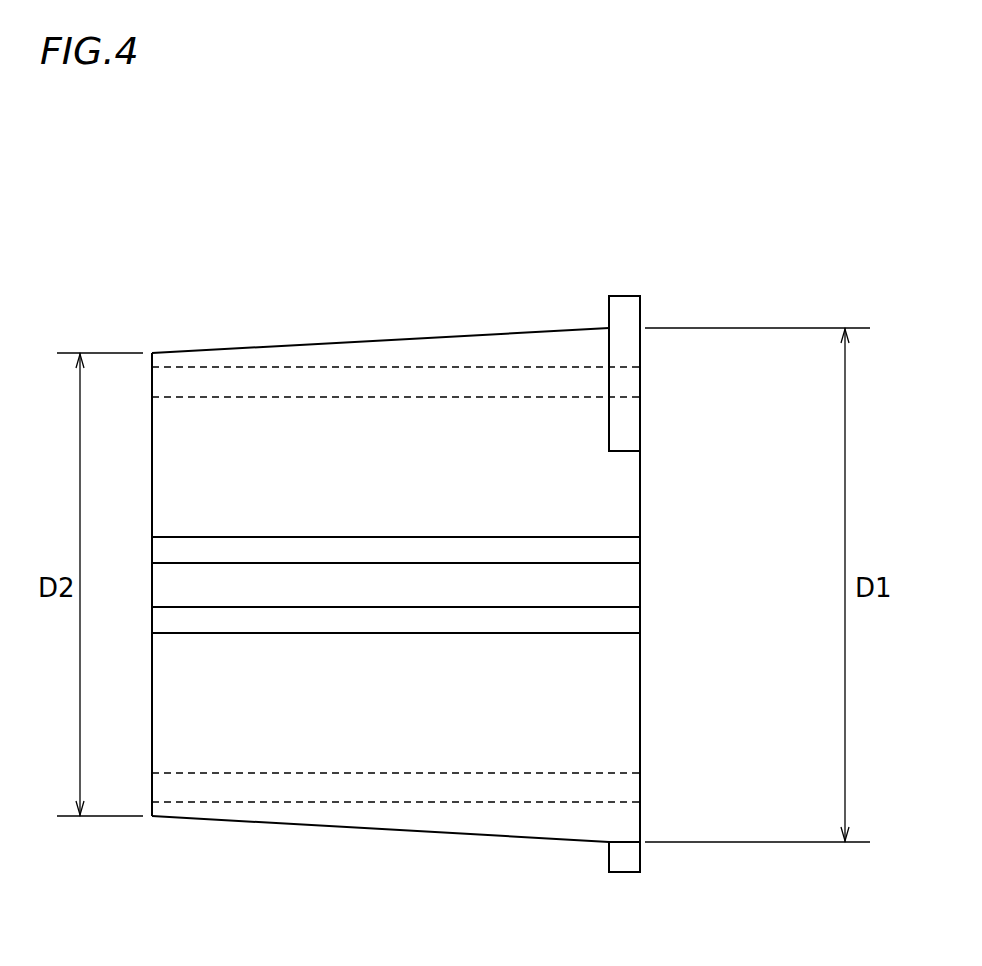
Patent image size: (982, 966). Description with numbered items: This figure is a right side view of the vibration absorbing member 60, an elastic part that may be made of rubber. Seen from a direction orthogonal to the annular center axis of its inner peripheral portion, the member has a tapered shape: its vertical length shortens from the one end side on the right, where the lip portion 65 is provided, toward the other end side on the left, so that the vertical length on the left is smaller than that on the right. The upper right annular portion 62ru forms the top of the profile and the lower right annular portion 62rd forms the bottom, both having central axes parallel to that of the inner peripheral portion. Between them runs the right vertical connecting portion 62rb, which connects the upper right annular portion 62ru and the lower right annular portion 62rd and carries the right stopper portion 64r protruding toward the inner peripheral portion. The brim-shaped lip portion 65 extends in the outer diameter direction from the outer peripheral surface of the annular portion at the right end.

The vibration absorbing member 60 is at (460, 511).
The upper right annular portion 62ru is at (413, 352).
The lower right annular portion 62rd is at (410, 820).
The right vertical connecting portion 62rb is at (552, 473).
The right stopper portion 64r is at (552, 592).
The lip portion 65 is at (631, 311).